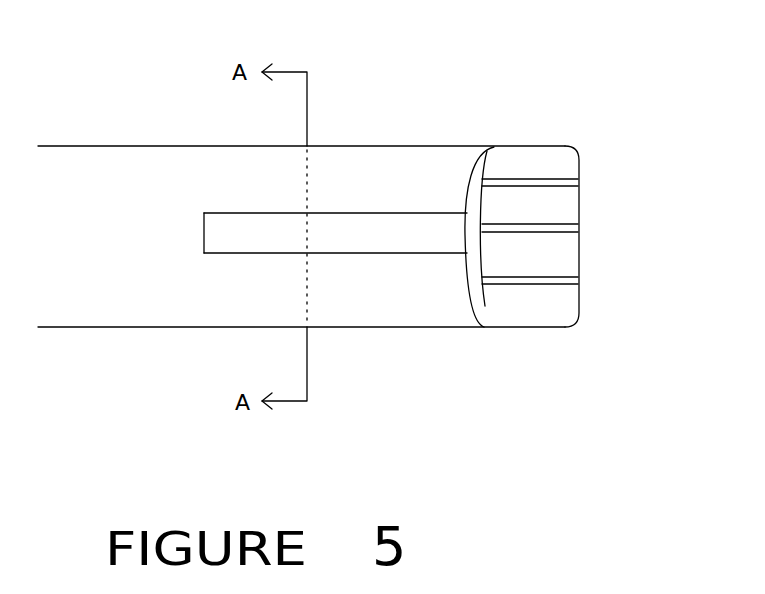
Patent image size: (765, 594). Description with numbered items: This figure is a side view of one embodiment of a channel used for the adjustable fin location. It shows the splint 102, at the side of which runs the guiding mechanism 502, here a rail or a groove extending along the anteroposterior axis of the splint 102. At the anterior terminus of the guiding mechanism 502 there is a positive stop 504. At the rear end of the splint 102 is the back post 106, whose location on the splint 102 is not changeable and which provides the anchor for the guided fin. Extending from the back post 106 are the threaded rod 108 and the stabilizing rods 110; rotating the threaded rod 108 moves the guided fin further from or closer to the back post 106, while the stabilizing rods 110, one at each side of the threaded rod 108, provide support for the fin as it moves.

The splint 102 is at (97, 146).
The back post 106 is at (548, 157).
The threaded rod 108 is at (545, 232).
The stabilizing rod 110 is at (557, 188).
The guiding mechanism 502 is at (415, 237).
The positive stop 504 is at (203, 233).